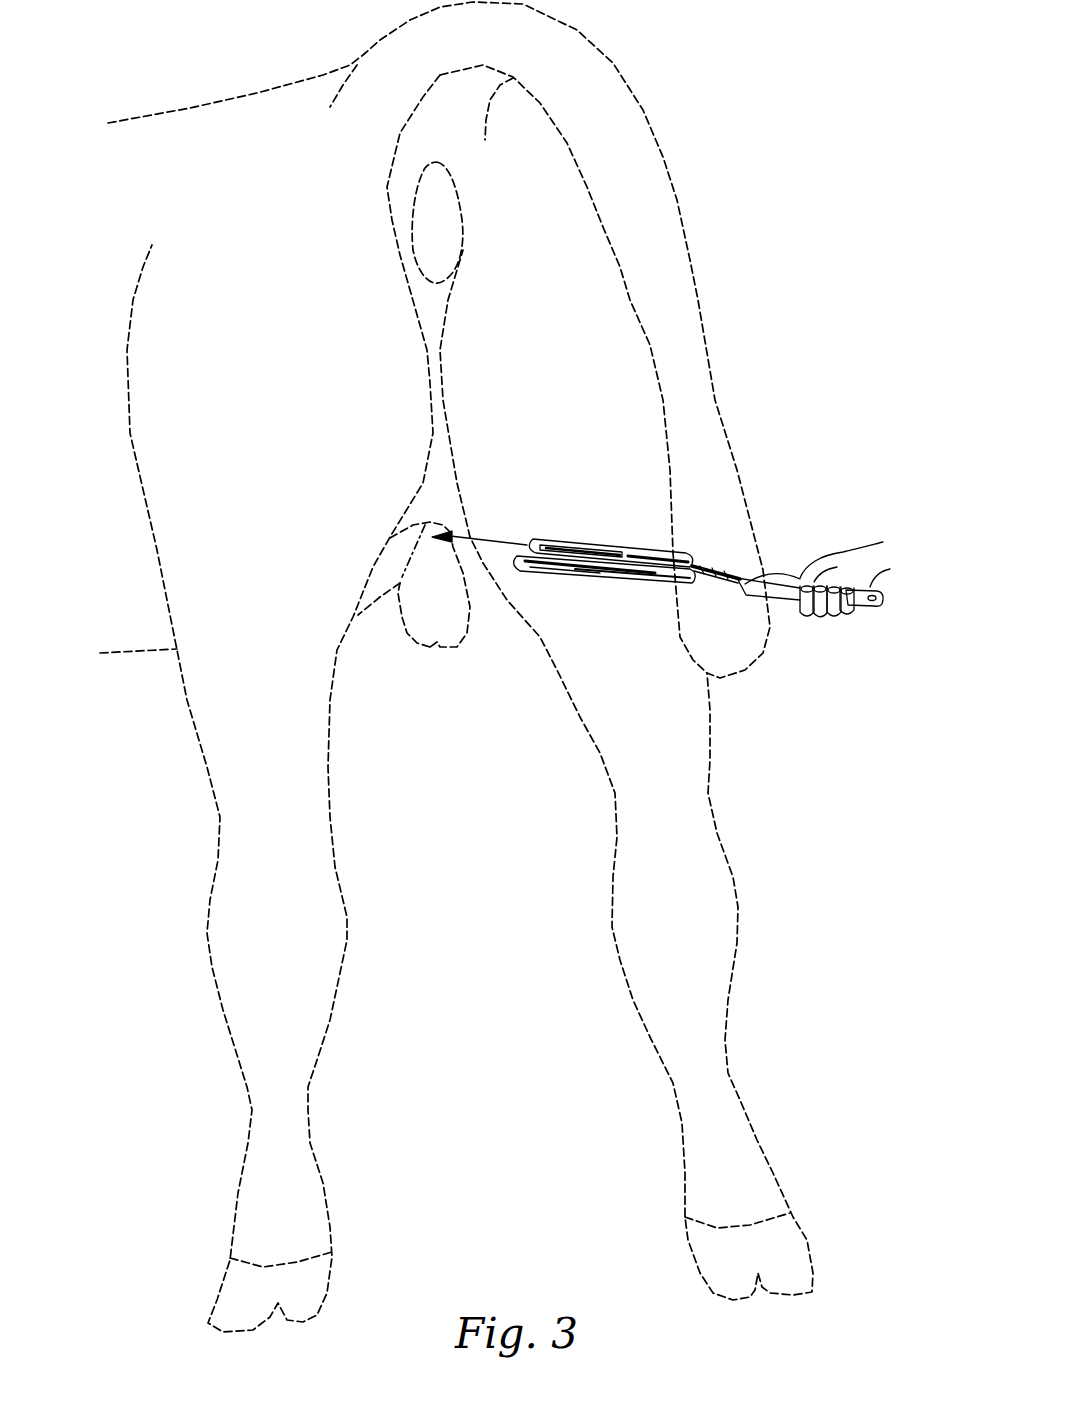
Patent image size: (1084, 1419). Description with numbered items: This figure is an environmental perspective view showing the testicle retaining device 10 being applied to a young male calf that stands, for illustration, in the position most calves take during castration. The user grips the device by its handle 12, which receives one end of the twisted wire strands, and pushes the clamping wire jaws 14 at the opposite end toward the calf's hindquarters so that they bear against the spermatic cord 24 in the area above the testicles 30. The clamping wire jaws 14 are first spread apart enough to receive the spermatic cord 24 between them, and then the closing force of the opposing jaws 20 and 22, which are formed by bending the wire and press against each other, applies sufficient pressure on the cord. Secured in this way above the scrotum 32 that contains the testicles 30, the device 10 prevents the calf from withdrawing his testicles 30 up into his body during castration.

The testicle retaining device 10 is at (712, 552).
The handle 12 is at (880, 603).
The clamping wire jaws 14 is at (597, 542).
The opposing jaw 20 is at (524, 546).
The opposing jaw 22 is at (514, 566).
The spermatic cord 24 is at (430, 523).
The testicles 30 is at (457, 617).
The scrotum 32 is at (412, 640).